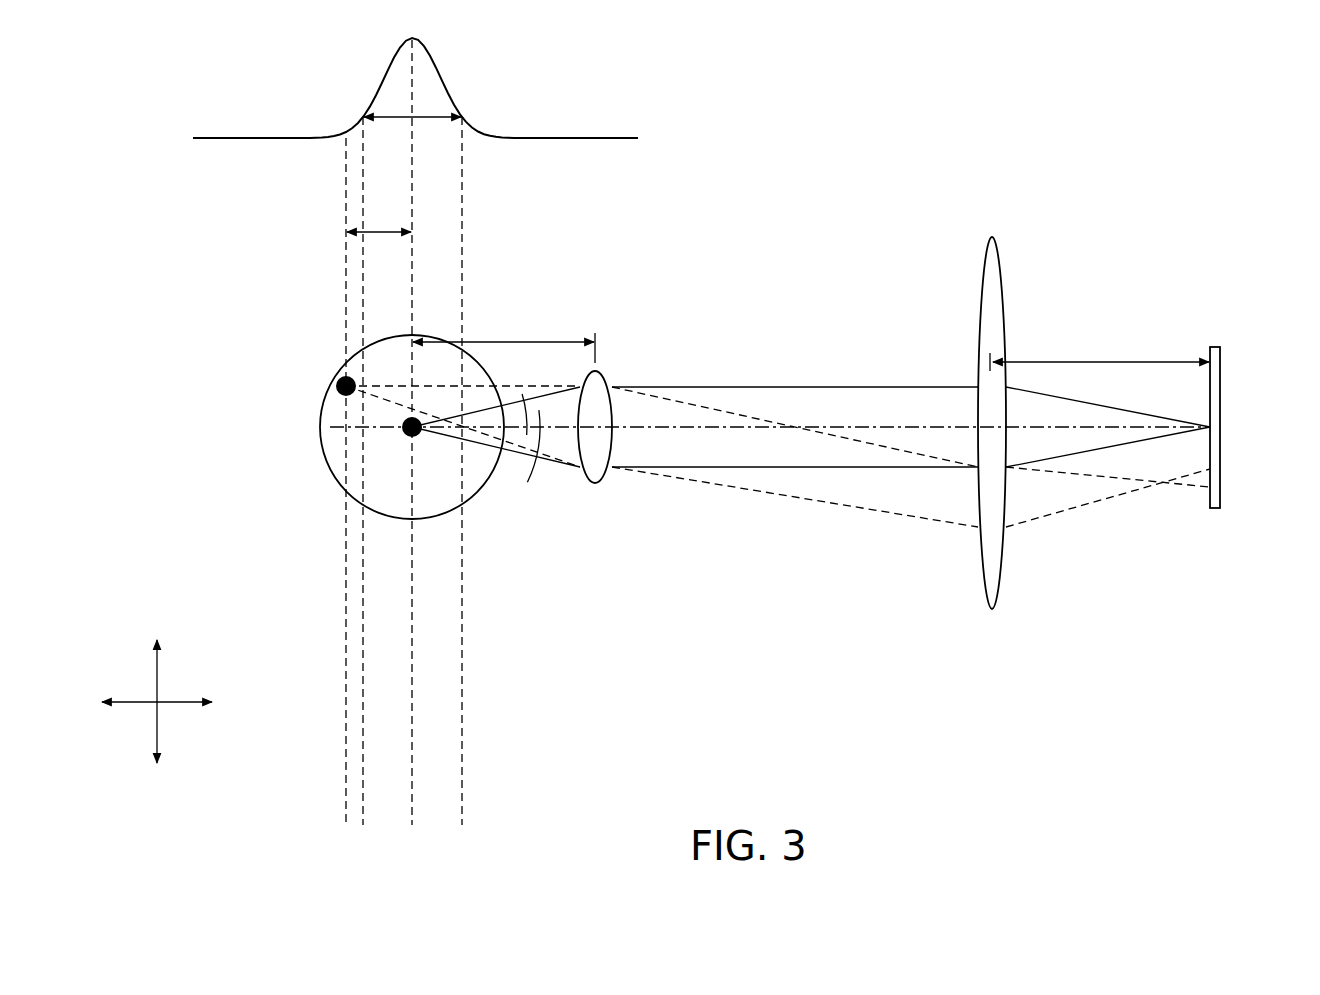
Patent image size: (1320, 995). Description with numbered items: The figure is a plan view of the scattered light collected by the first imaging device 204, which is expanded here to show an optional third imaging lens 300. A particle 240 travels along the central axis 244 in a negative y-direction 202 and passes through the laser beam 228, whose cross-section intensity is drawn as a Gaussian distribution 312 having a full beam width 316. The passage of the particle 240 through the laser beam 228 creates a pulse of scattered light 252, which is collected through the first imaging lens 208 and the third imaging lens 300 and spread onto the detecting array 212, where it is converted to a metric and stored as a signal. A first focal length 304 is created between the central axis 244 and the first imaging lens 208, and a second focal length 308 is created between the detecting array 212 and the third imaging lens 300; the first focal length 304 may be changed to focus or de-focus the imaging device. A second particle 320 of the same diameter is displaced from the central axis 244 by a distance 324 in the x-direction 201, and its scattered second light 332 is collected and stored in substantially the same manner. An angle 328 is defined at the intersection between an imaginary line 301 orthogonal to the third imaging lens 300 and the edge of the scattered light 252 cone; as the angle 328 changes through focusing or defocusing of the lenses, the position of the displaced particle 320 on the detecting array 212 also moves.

The x-direction 201 is at (179, 702).
The y-direction 202 is at (155, 684).
The first imaging device 204 is at (1078, 126).
The first imaging lens 208 is at (596, 487).
The detecting array 212 is at (1212, 382).
The laser beam 228 is at (322, 437).
The particle 240 is at (404, 440).
The central axis 244 is at (410, 66).
The scattered light 252 is at (755, 470).
The third imaging lens 300 is at (990, 237).
The imaginary line 301 is at (898, 425).
The first focal length 304 is at (503, 342).
The second focal length 308 is at (1095, 360).
The Gaussian distribution 312 is at (590, 137).
The full beam width 316 is at (397, 120).
The second particle 320 is at (334, 386).
The distance 324 is at (380, 233).
The angle 328 is at (527, 482).
The scattered second light 332 is at (700, 405).